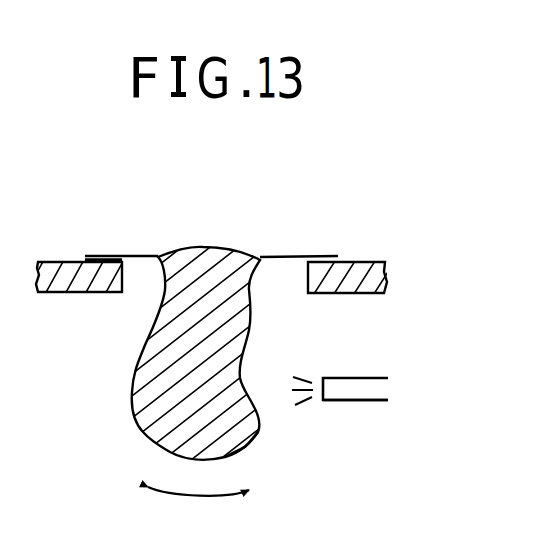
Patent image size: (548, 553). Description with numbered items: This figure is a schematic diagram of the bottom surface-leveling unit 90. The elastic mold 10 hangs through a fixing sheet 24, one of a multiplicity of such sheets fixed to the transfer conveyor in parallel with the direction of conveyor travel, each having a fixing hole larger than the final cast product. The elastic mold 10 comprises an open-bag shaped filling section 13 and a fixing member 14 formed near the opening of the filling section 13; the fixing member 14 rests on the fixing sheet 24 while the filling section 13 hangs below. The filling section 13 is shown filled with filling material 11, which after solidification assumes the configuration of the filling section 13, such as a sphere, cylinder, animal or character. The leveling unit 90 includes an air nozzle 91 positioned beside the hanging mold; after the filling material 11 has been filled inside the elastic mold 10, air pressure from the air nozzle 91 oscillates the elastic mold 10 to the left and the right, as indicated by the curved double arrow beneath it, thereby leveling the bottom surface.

The elastic mold 10 is at (292, 255).
The filling material 11 is at (141, 398).
The filling section 13 is at (259, 435).
The fixing member 14 is at (107, 256).
The fixing sheet 24 is at (370, 266).
The bottom surface-leveling unit 90 is at (364, 360).
The air nozzle 91 is at (367, 396).